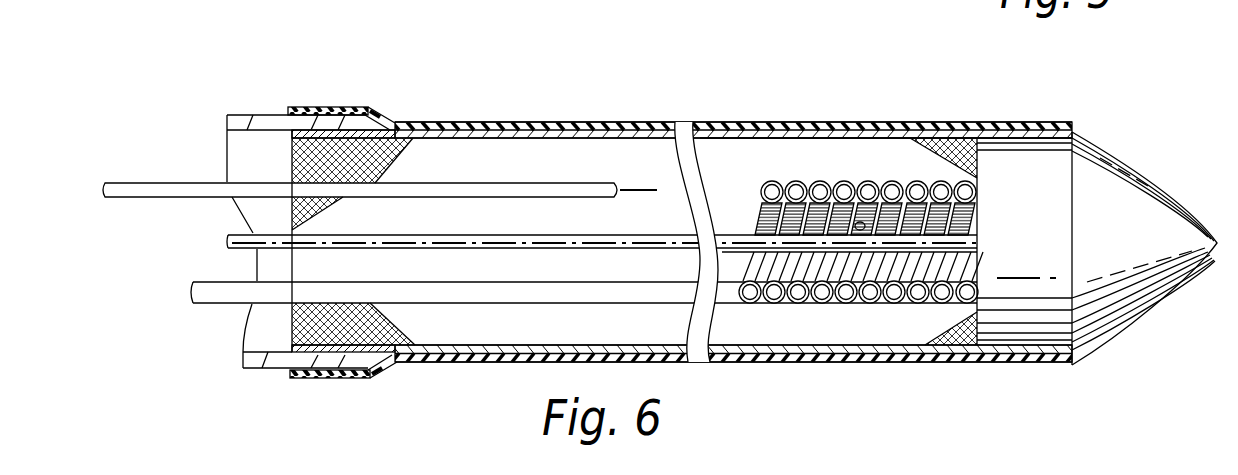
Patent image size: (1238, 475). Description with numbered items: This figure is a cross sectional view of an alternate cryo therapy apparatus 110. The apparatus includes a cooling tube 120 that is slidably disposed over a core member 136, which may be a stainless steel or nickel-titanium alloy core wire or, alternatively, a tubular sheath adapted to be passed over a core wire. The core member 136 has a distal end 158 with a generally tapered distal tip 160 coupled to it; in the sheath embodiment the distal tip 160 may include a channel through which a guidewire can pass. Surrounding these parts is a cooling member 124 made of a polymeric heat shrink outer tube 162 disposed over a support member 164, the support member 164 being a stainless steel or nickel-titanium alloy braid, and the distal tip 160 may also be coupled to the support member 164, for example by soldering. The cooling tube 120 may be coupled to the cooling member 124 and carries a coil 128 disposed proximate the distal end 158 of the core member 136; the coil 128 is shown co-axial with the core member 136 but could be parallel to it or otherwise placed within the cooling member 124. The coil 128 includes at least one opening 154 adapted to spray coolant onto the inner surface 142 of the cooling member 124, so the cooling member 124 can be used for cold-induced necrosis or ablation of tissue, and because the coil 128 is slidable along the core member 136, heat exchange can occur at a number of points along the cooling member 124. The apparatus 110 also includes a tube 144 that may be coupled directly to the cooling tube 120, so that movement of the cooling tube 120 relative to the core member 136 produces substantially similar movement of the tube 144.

The cryo therapy apparatus 110 is at (456, 62).
The cooling tube 120 is at (487, 296).
The cooling member 124 is at (843, 122).
The coil 128 is at (829, 268).
The core member 136 is at (529, 249).
The inner surface 142 is at (796, 140).
The tube 144 is at (535, 188).
The opening 154 is at (861, 222).
The distal end 158 is at (958, 243).
The distal tip 160 is at (1135, 242).
The outer tube 162 is at (622, 122).
The support member 164 is at (345, 153).